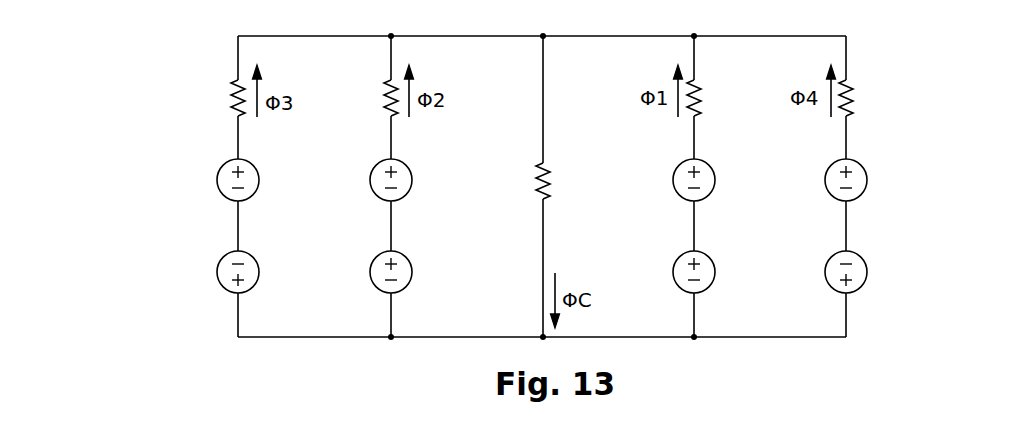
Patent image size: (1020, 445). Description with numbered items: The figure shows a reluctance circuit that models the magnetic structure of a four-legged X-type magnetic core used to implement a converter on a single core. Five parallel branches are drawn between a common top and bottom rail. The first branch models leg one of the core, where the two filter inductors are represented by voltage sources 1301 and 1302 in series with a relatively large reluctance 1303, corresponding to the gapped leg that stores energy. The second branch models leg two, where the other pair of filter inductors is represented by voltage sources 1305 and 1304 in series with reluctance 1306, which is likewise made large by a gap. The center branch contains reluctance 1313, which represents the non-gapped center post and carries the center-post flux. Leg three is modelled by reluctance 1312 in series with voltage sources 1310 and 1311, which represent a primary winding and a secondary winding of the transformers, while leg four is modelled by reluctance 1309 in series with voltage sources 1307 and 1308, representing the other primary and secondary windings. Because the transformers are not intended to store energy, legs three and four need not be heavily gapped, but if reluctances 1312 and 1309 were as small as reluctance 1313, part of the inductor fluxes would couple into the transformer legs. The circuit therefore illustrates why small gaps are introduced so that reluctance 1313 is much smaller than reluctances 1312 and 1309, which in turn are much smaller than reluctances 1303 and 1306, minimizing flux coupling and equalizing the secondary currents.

The voltage source 1301 is at (713, 186).
The voltage source 1302 is at (713, 278).
The reluctance 1303 is at (702, 108).
The voltage source 1304 is at (410, 186).
The voltage source 1305 is at (410, 278).
The reluctance 1306 is at (387, 103).
The voltage source 1307 is at (865, 186).
The voltage source 1308 is at (865, 278).
The reluctance 1309 is at (854, 108).
The voltage source 1310 is at (258, 186).
The voltage source 1311 is at (258, 278).
The reluctance 1312 is at (240, 83).
The reluctance 1313 is at (548, 172).